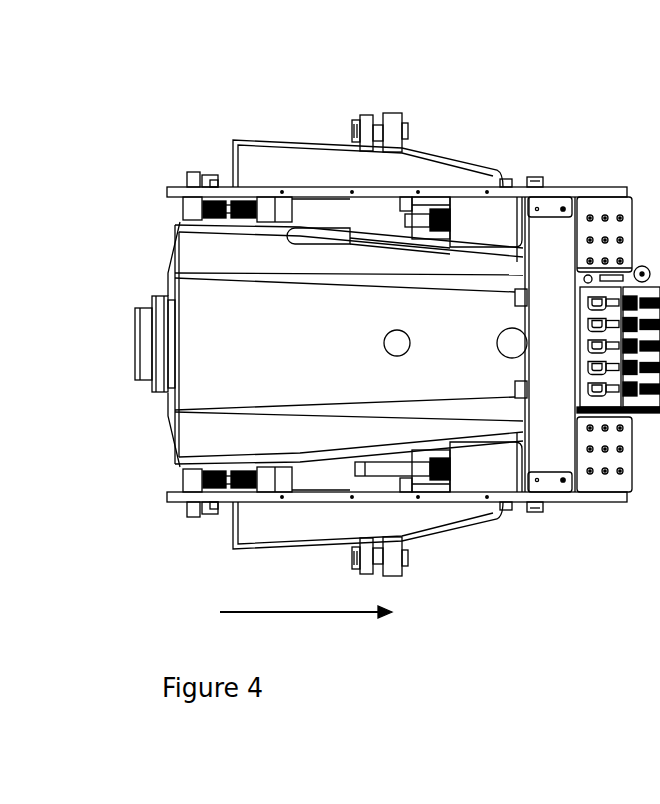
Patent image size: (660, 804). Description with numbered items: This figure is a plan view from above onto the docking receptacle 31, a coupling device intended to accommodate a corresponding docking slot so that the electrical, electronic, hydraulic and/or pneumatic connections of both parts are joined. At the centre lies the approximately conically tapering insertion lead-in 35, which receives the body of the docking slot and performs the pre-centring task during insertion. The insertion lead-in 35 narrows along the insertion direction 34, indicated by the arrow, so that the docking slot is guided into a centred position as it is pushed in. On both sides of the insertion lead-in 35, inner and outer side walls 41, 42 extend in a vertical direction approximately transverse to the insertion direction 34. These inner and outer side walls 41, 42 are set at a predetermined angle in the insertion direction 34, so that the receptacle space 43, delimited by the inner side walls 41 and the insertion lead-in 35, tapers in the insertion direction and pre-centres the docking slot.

The docking receptacle 31 is at (612, 138).
The insertion direction 34 is at (306, 602).
The insertion lead-in 35 is at (284, 365).
The inner side walls 41 is at (373, 237).
The outer side walls 42 is at (328, 192).
The receptacle space 43 is at (240, 308).